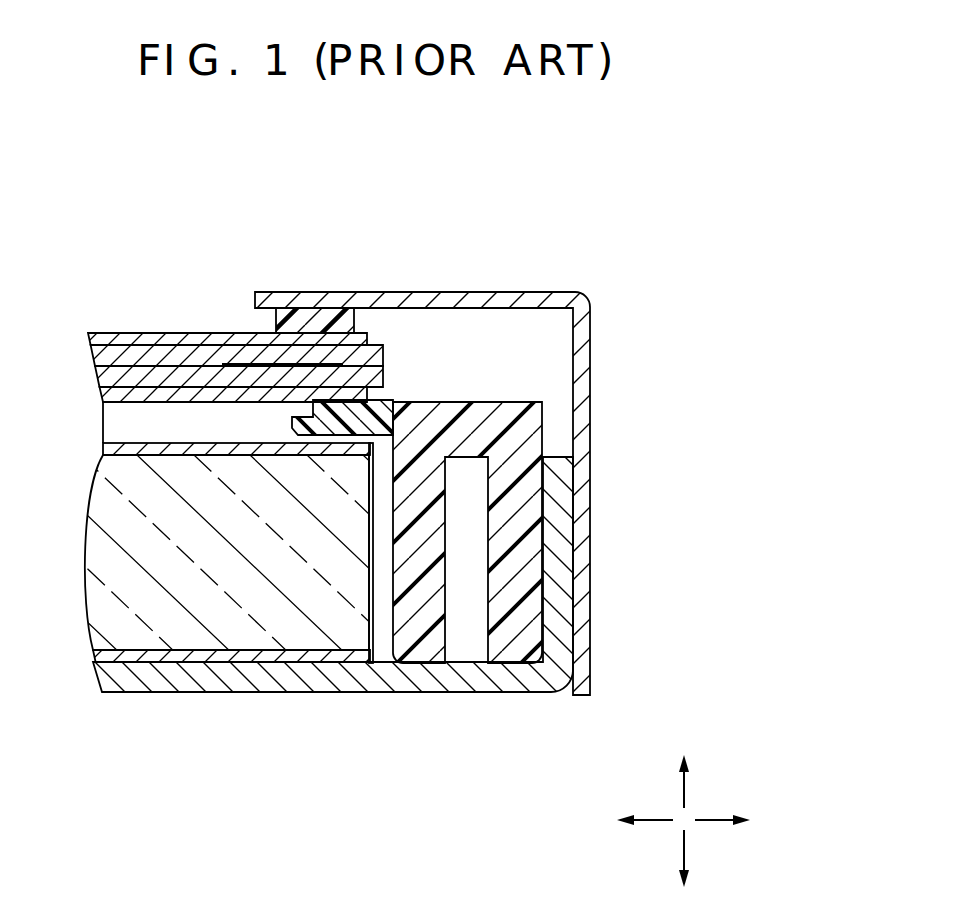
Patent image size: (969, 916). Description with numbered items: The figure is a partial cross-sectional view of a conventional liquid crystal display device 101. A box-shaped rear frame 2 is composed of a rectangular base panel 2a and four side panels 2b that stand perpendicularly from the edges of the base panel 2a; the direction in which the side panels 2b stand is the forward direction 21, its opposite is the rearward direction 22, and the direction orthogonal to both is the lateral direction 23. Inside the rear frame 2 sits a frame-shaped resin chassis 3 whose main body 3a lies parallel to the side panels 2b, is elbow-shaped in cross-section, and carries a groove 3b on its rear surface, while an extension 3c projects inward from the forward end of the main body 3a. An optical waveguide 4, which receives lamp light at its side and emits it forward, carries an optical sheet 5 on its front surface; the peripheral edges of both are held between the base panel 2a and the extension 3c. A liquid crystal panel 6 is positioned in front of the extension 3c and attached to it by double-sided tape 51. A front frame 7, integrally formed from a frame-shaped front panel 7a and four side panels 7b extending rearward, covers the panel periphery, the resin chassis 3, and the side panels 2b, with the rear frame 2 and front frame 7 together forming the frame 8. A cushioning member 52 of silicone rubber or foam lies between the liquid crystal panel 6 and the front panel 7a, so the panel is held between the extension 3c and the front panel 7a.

The liquid crystal display device 101 is at (631, 297).
The rear frame 2 is at (577, 753).
The base panel 2a is at (400, 665).
The side panels 2b is at (560, 583).
The resin chassis 3 is at (700, 402).
The main body 3a is at (513, 516).
The groove 3b is at (490, 505).
The extension 3c is at (400, 404).
The optical waveguide 4 is at (117, 537).
The optical sheet 5 is at (120, 450).
The liquid crystal panel 6 is at (146, 325).
The double-sided tape 51 is at (330, 412).
The cushioning member 52 is at (310, 322).
The front frame 7 is at (608, 228).
The front panel 7a is at (540, 292).
The side panels 7b is at (583, 390).
The frame 8 is at (606, 568).
The forward direction 21 is at (685, 792).
The rearward direction 22 is at (683, 852).
The lateral direction 23 is at (652, 818).